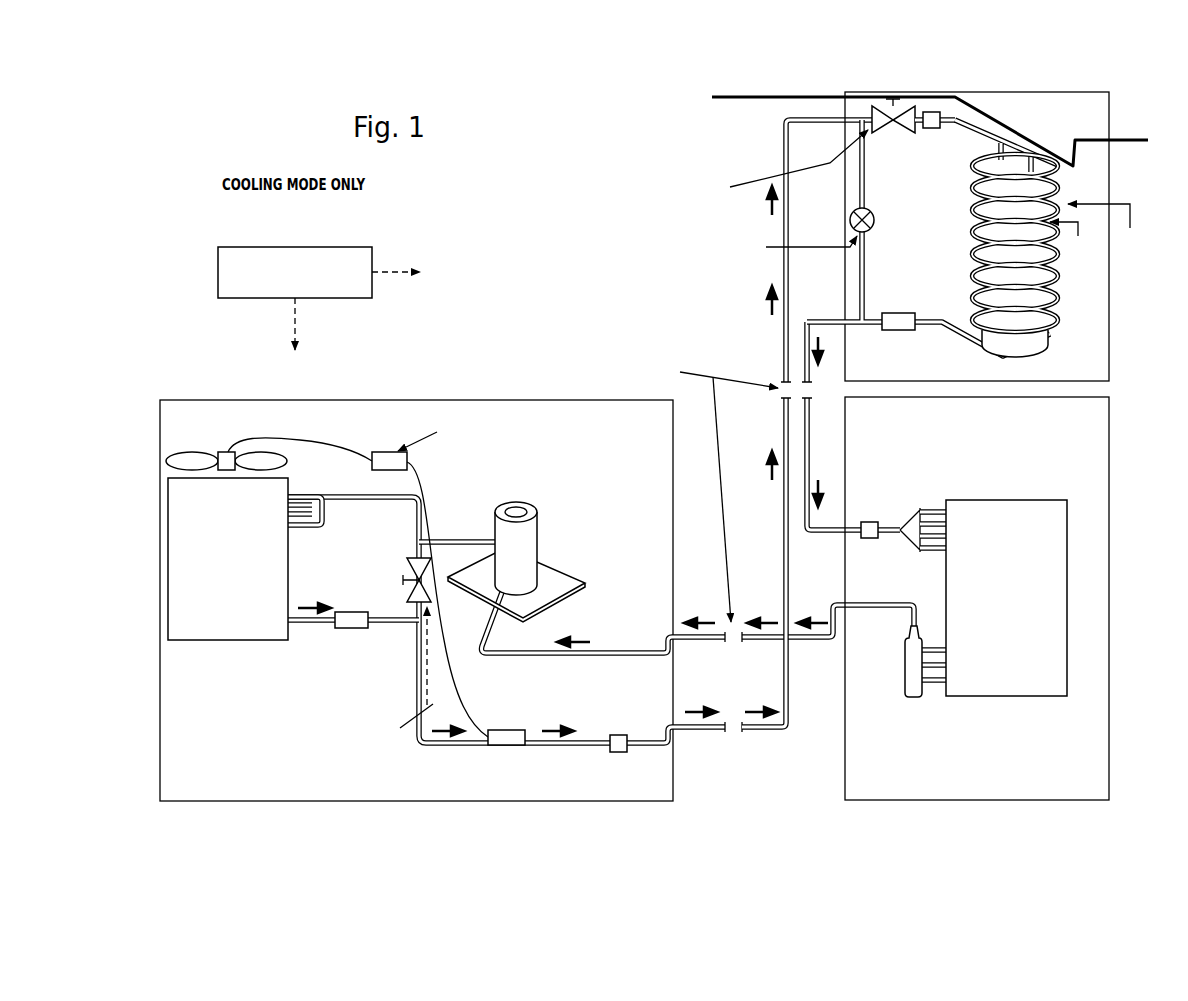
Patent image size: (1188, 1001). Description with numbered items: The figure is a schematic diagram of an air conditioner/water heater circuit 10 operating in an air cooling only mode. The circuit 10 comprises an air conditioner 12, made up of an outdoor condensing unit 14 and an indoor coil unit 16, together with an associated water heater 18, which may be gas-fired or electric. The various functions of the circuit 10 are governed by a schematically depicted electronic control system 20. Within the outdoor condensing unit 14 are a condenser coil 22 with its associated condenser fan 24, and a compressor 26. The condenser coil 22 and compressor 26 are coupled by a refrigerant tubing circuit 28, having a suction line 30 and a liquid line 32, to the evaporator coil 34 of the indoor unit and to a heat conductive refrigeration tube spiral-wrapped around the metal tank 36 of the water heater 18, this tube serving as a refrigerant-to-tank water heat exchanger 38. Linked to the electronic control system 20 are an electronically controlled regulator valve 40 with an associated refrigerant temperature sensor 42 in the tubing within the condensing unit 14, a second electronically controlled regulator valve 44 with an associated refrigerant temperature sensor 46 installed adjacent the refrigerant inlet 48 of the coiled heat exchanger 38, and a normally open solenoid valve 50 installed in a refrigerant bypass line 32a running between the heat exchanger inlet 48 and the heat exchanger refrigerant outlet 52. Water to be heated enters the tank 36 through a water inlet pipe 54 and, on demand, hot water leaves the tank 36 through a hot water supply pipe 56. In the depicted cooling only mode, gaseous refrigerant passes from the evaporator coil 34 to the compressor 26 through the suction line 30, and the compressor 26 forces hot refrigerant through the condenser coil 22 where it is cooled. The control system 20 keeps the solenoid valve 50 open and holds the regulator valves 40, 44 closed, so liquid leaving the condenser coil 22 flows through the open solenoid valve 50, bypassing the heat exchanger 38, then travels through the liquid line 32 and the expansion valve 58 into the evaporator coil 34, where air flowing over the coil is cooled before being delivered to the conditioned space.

The air conditioner/water heater circuit 10 is at (222, 383).
The air conditioner 12 is at (1135, 760).
The outdoor condensing unit 14 is at (639, 623).
The indoor coil unit 16 is at (987, 473).
The water heater 18 is at (963, 243).
The electronic control system 20 is at (218, 266).
The condenser coil 22 is at (290, 566).
The condenser fan 24 is at (200, 452).
The compressor 26 is at (537, 548).
The refrigerant tubing circuit 28 is at (766, 742).
The suction line 30 is at (703, 643).
The liquid line 32 is at (703, 733).
The refrigerant bypass line 32a is at (866, 300).
The evaporator coil 34 is at (1005, 697).
The tank 36 is at (1035, 357).
The heat exchanger 38 is at (1062, 193).
The electronically controlled regulator valve 40 is at (407, 572).
The refrigerant temperature sensor 42 is at (618, 752).
The electronically controlled regulator valve 44 is at (889, 129).
The refrigerant temperature sensor 46 is at (928, 130).
The refrigerant inlet 48 is at (965, 128).
The normally open solenoid valve 50 is at (868, 232).
The heat exchanger refrigerant outlet 52 is at (947, 318).
The water inlet pipe 54 is at (720, 100).
The hot water supply pipe 56 is at (1120, 142).
The expansion valve 58 is at (876, 539).